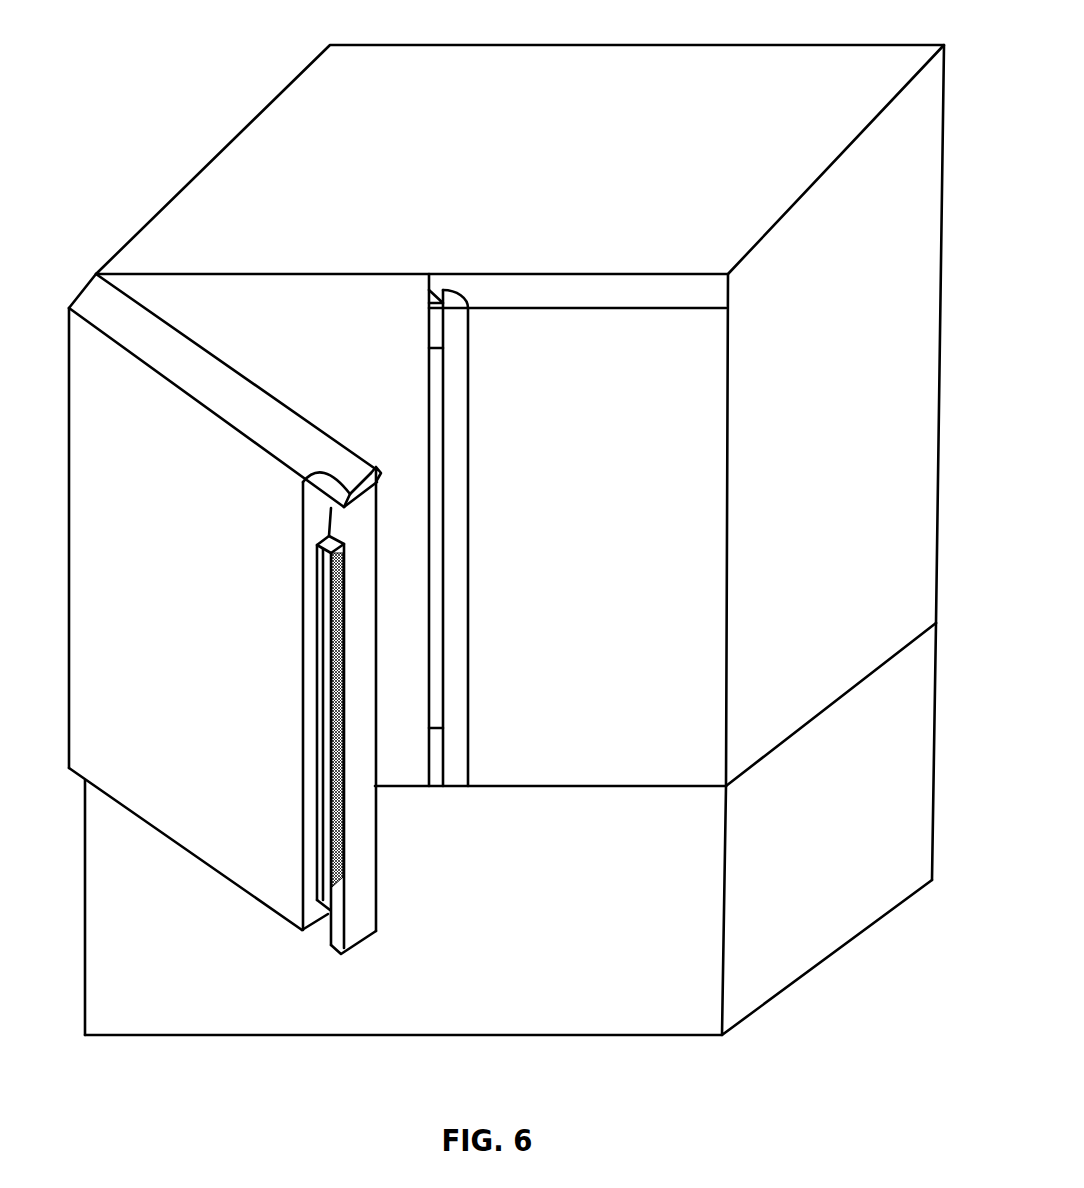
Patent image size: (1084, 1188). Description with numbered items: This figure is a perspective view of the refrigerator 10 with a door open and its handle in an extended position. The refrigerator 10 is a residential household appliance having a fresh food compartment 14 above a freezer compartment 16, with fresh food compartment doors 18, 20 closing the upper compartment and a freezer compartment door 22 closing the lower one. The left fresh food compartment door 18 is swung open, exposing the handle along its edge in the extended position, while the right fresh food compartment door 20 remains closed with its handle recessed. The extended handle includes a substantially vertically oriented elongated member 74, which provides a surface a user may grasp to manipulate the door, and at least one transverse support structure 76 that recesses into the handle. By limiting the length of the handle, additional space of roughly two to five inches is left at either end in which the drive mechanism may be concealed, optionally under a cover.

The refrigerator 10 is at (214, 84).
The fresh food compartment 14 is at (800, 573).
The freezer compartment 16 is at (801, 797).
The fresh food compartment door 18 is at (87, 437).
The fresh food compartment door 20 is at (707, 377).
The freezer compartment door 22 is at (78, 930).
The elongated member 74 is at (316, 798).
The transverse support structure 76 is at (335, 885).